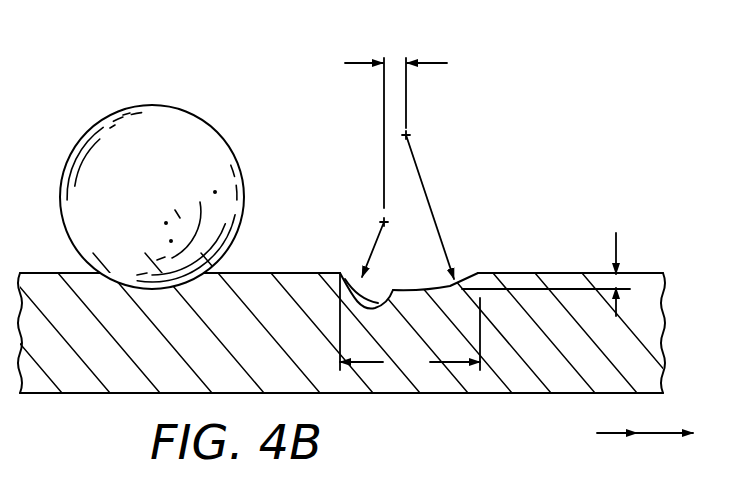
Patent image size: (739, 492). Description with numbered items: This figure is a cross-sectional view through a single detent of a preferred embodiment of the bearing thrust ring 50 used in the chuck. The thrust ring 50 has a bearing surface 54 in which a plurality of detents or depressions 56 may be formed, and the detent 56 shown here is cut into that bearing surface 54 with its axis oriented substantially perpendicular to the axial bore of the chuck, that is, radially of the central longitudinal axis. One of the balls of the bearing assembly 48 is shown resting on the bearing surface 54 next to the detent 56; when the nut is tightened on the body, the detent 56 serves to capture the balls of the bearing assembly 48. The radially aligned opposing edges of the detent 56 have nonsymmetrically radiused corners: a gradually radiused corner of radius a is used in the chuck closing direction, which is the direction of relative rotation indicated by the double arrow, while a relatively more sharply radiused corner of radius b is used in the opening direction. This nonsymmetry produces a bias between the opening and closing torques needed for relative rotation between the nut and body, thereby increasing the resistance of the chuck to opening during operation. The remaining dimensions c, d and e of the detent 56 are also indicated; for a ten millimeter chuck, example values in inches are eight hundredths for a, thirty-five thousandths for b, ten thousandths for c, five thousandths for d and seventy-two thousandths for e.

The bearing assembly 48 is at (147, 198).
The thrust ring 50 is at (82, 337).
The bearing surface 54 is at (537, 273).
The detent 56 is at (340, 273).
The radius of gradually radiused corner a is at (423, 187).
The radius of sharply radiused corner b is at (374, 246).
The detent dimension c is at (392, 63).
The detent depth dimension d is at (618, 276).
The detent width dimension e is at (410, 326).